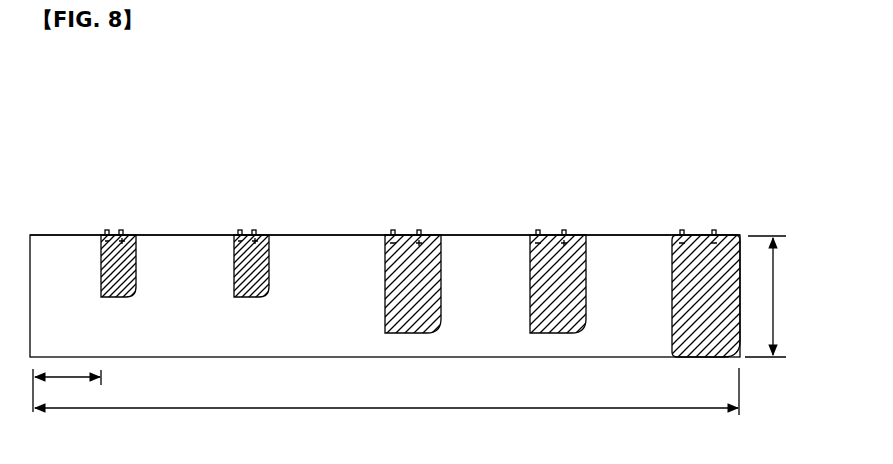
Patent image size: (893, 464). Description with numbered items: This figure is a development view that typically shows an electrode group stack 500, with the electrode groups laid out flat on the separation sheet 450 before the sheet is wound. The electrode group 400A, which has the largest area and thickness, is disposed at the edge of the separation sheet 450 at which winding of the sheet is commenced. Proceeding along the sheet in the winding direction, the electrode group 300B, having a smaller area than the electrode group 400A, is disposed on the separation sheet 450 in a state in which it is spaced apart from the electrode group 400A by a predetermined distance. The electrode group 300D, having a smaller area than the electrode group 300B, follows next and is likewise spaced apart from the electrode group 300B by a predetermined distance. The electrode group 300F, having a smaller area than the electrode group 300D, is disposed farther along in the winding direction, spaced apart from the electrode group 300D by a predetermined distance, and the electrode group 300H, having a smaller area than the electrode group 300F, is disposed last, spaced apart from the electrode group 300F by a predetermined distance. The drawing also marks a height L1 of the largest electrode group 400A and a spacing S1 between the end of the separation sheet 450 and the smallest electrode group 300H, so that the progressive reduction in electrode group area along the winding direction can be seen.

The battery module / housing 500 is at (70, 109).
The housing body 450 is at (612, 262).
The electrode group 300H is at (133, 236).
The electrode group 300F is at (266, 236).
The electrode group 300D is at (432, 236).
The electrode group 300B is at (581, 236).
The electrode group 400A is at (697, 240).
The length dimension L1 is at (765, 296).
The spacing dimension S1 is at (386, 391).